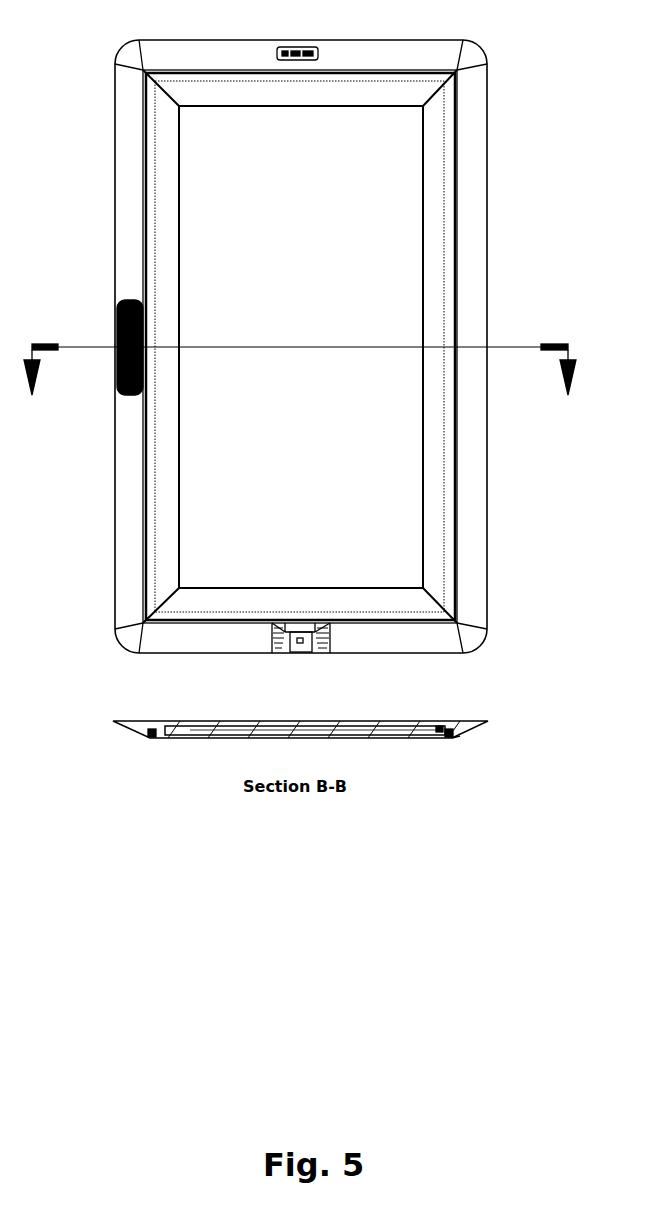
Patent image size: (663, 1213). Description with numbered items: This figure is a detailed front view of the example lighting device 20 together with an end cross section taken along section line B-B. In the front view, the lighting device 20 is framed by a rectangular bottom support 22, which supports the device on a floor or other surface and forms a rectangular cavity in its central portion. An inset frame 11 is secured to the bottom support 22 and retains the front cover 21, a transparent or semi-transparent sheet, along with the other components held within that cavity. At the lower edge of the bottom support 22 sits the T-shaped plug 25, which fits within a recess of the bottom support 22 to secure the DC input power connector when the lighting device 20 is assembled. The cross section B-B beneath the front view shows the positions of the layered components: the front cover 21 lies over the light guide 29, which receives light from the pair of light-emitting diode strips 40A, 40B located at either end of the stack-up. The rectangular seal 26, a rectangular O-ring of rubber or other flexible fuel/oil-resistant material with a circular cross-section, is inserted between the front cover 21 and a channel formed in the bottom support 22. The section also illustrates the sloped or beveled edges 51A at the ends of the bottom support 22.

The lighting device 20 is at (542, 73).
The front cover 21 is at (280, 253).
The inset frame 11 is at (435, 424).
The bottom support 22 is at (487, 519).
The T-shaped plug 25 is at (300, 638).
The light guide 29 is at (222, 728).
The light-emitting diode (LED) strip 40A is at (428, 725).
The light-emitting diode (LED) strip 40B is at (172, 725).
The sloped/beveled edges 51A is at (460, 735).
The rectangular seal 26 is at (452, 737).